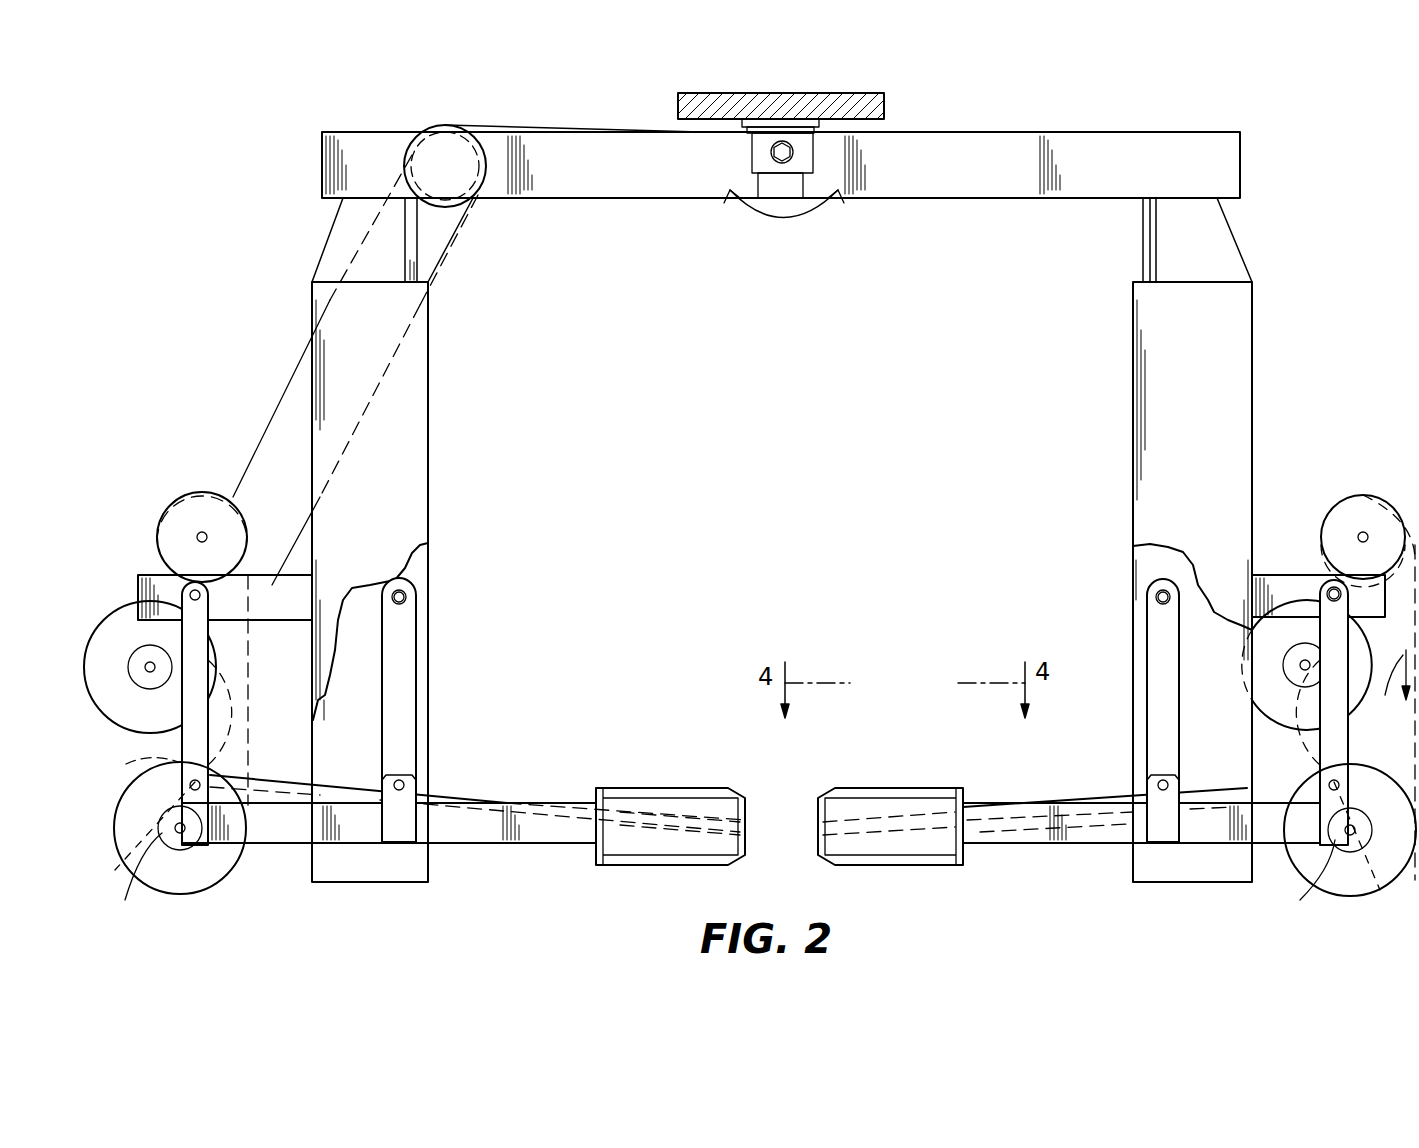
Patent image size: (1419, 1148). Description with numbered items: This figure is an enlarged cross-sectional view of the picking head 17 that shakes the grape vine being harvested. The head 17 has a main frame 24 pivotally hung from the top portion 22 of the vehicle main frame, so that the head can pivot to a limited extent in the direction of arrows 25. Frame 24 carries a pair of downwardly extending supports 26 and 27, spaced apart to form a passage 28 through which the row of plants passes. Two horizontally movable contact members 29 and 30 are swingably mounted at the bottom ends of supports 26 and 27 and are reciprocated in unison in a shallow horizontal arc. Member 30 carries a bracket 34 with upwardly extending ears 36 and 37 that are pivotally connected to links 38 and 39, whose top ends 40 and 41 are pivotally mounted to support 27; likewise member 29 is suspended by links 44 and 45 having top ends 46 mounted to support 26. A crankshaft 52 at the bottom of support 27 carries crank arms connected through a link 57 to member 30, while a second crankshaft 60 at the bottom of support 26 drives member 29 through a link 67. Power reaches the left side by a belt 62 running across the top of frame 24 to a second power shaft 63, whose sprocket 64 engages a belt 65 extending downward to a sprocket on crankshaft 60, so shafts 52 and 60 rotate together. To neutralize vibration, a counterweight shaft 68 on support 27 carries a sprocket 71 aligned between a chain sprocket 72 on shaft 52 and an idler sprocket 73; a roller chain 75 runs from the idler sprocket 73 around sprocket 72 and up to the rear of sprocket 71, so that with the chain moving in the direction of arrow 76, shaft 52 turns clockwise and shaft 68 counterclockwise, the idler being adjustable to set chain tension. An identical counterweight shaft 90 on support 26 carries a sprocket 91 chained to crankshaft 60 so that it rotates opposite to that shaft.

The picking head 17 is at (1308, 232).
The top portion of main frame 22 is at (885, 108).
The main frame 24 is at (1232, 155).
The arrows 25 is at (800, 230).
The support 26 is at (430, 390).
The support 27 is at (1152, 350).
The passage 28 is at (773, 461).
The contact member 29 is at (635, 805).
The contact member 30 is at (900, 805).
The bracket 34 is at (1012, 828).
The ear 36 is at (1160, 838).
The ear 37 is at (1325, 865).
The link 38 is at (1152, 640).
The link 39 is at (1322, 740).
The top end of link 40 is at (1150, 597).
The top end of link 41 is at (1327, 590).
The link 44 is at (193, 742).
The link 45 is at (405, 675).
The top ends of links 46 is at (412, 597).
The crankshaft 52 is at (1360, 840).
The link 57 is at (1120, 800).
The second crankshaft 60 is at (165, 835).
The belt 62 is at (520, 130).
The second power shaft 63 is at (474, 200).
The sprocket 64 is at (438, 127).
The belt 65 is at (262, 430).
The link 67 is at (440, 805).
The counterweight shaft 68 is at (1300, 665).
The sprocket 71 is at (1275, 700).
The chain sprocket 72 is at (1335, 875).
The idler sprocket 73 is at (1367, 520).
The roller chain 75 is at (1415, 750).
The arrow 76 is at (1388, 691).
The counterweight shaft 90 is at (138, 660).
The sprocket 91 is at (135, 708).